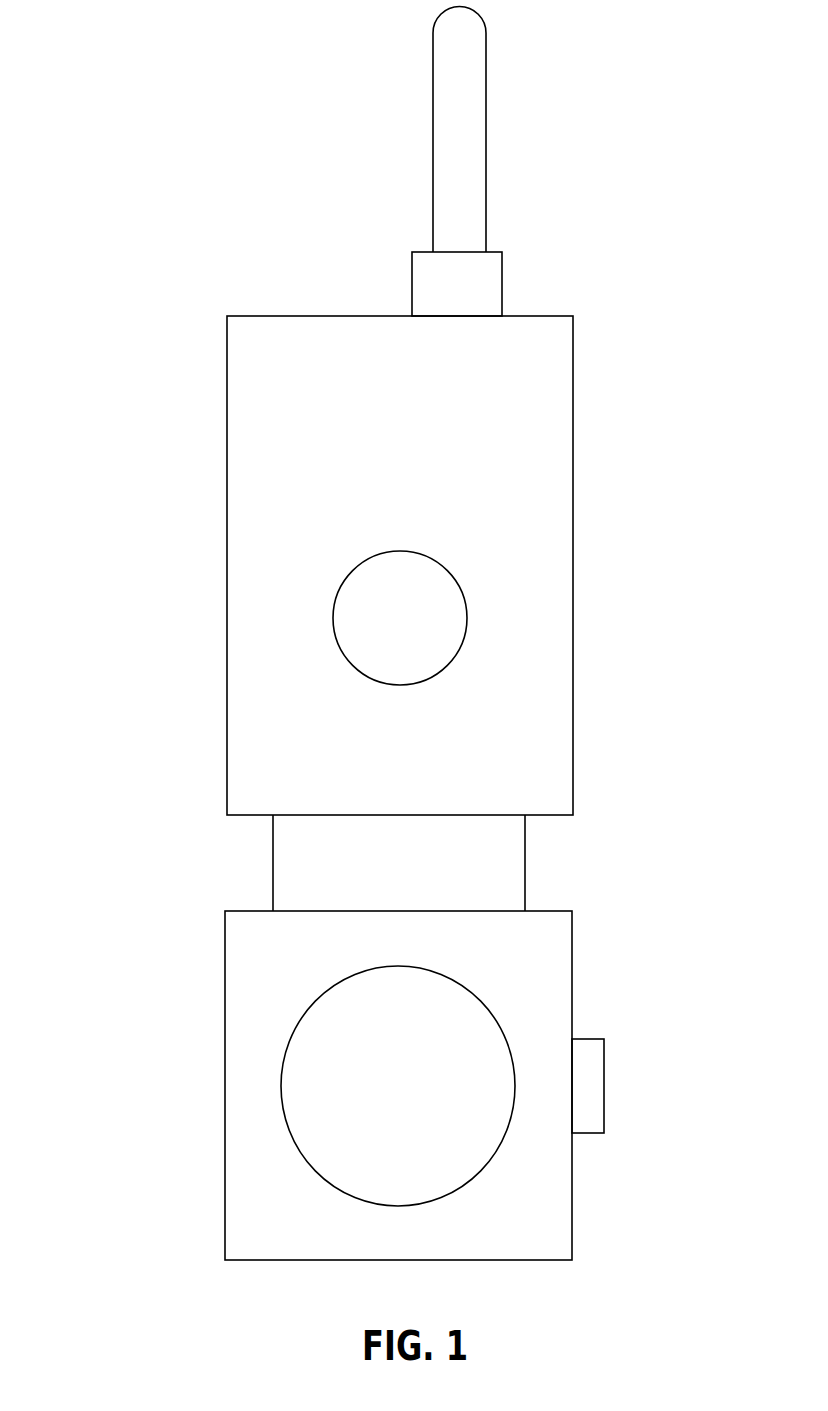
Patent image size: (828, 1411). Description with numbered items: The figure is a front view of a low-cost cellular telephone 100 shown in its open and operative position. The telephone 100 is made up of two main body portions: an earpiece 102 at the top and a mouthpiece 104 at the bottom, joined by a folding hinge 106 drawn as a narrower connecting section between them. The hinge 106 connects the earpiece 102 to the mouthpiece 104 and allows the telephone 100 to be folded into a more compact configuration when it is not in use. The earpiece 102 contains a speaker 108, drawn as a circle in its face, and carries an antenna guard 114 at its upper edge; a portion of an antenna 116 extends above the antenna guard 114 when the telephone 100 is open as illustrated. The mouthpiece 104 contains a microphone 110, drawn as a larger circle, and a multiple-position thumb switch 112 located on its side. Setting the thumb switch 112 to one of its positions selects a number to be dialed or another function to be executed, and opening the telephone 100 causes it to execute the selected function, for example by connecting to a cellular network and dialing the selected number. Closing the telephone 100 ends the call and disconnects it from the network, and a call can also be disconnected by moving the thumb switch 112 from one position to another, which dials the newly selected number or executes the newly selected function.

The cellular telephone 100 is at (168, 144).
The earpiece 102 is at (573, 612).
The mouthpiece 104 is at (572, 980).
The folding hinge 106 is at (525, 877).
The speaker 108 is at (424, 632).
The microphone 110 is at (426, 1097).
The multiple-position thumb switch 112 is at (604, 1085).
The antenna guard 114 is at (502, 300).
The antenna 116 is at (483, 210).